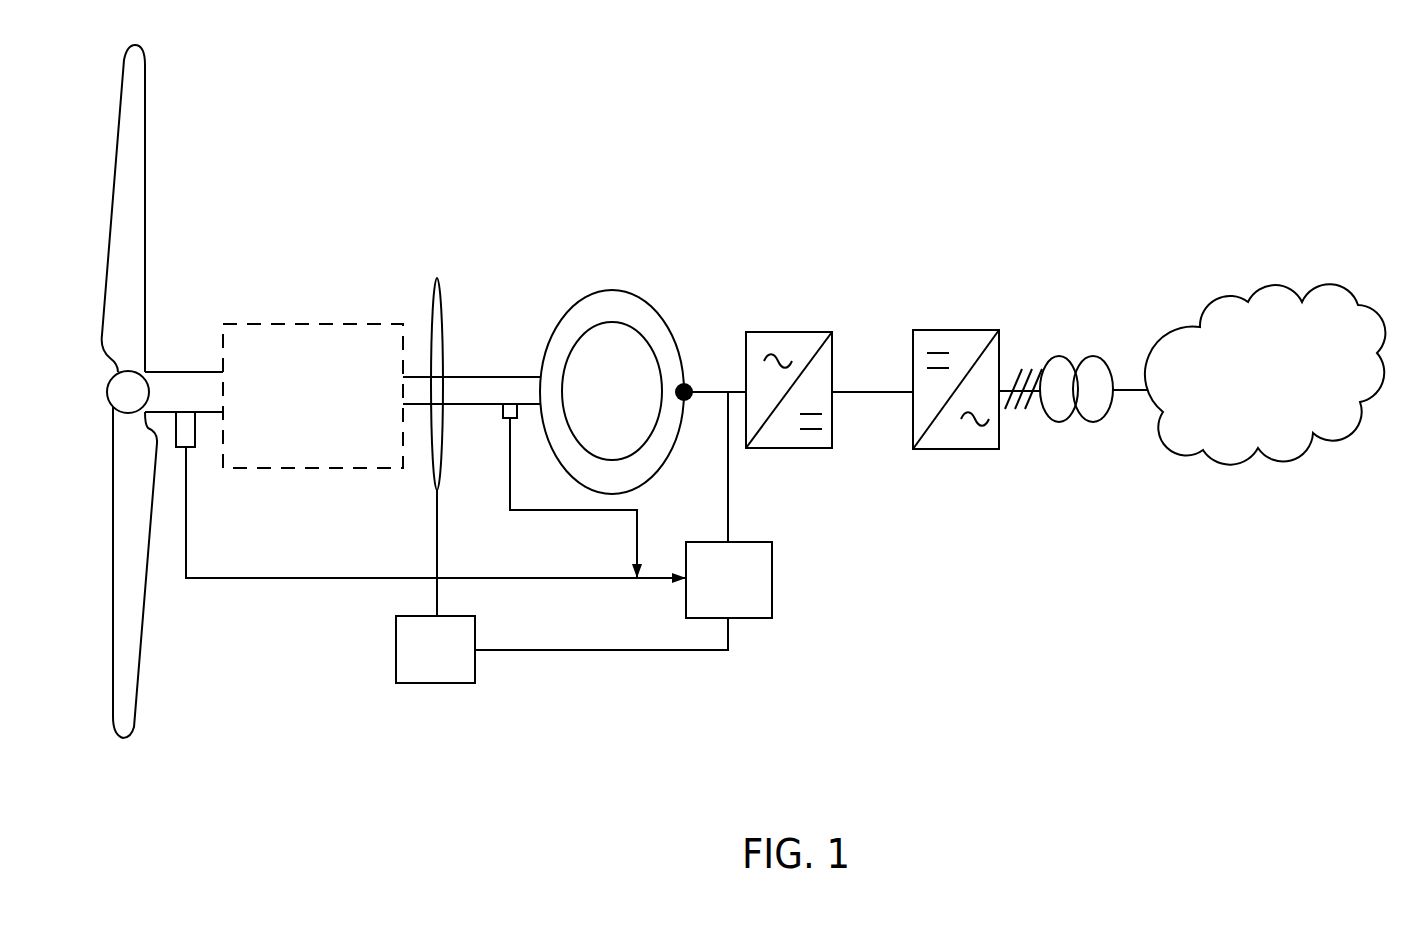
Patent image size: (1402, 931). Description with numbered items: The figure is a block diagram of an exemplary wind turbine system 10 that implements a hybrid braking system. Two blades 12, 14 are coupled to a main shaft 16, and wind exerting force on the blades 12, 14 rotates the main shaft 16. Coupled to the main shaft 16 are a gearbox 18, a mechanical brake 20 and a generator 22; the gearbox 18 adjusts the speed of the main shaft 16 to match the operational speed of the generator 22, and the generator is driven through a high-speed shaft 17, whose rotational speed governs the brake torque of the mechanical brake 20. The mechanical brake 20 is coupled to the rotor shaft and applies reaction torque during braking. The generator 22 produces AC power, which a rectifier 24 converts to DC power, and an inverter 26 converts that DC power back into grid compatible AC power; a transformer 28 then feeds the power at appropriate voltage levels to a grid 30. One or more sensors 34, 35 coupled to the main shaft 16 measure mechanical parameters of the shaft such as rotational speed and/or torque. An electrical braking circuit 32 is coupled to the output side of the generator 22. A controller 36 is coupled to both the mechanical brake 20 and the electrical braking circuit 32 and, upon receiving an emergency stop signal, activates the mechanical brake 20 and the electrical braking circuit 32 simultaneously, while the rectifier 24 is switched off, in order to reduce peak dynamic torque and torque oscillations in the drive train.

The wind turbine system 10 is at (1133, 120).
The blade 12 is at (145, 102).
The blade 14 is at (140, 680).
The main shaft 16 is at (167, 372).
The high-speed shaft 17 is at (467, 375).
The gearbox 18 is at (293, 323).
The mechanical brake 20 is at (437, 277).
The generator 22 is at (637, 292).
The rectifier 24 is at (773, 332).
The inverter 26 is at (957, 330).
The transformer 28 is at (1093, 357).
The grid 30 is at (1275, 288).
The electrical braking circuit 32 is at (772, 578).
The sensor 34 is at (185, 450).
The sensor 35 is at (515, 403).
The controller 36 is at (396, 668).